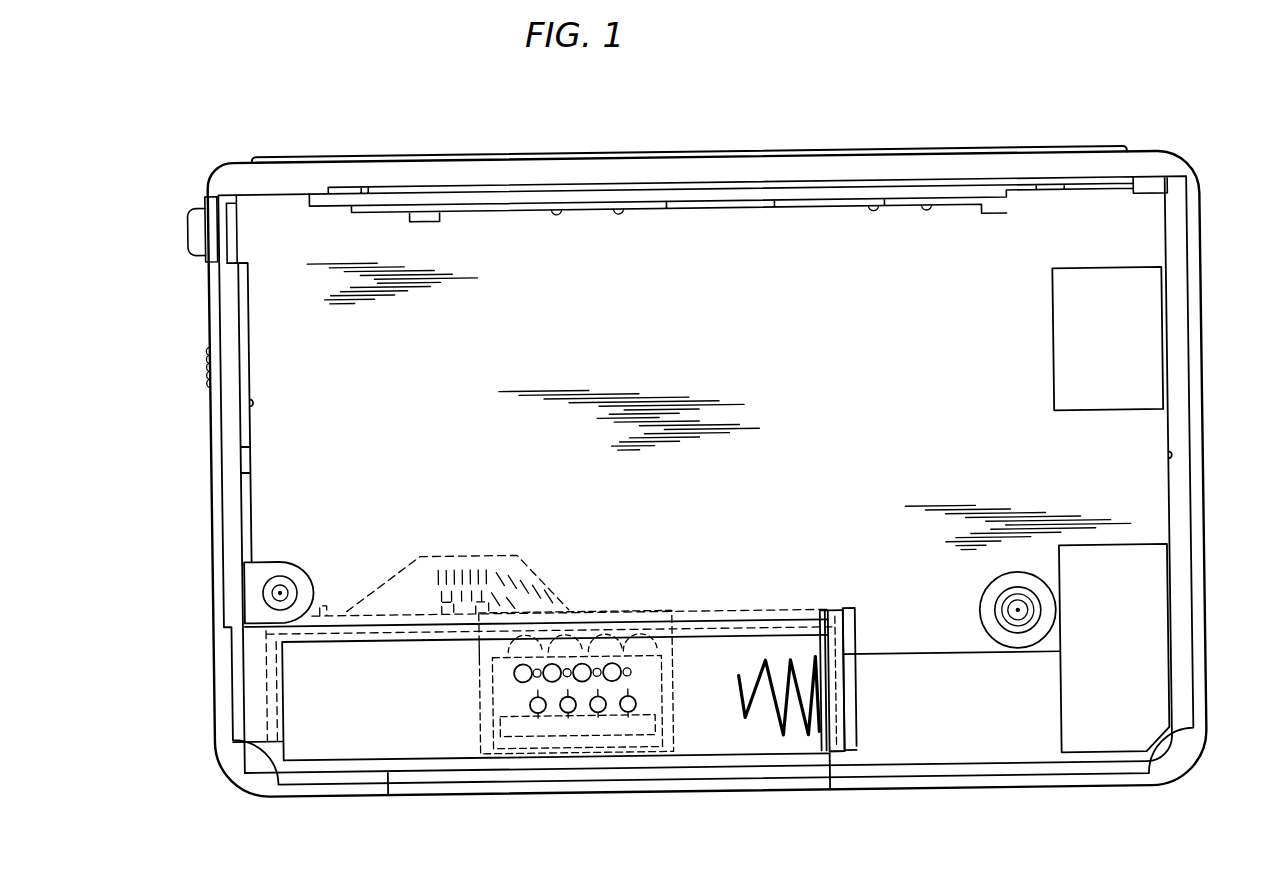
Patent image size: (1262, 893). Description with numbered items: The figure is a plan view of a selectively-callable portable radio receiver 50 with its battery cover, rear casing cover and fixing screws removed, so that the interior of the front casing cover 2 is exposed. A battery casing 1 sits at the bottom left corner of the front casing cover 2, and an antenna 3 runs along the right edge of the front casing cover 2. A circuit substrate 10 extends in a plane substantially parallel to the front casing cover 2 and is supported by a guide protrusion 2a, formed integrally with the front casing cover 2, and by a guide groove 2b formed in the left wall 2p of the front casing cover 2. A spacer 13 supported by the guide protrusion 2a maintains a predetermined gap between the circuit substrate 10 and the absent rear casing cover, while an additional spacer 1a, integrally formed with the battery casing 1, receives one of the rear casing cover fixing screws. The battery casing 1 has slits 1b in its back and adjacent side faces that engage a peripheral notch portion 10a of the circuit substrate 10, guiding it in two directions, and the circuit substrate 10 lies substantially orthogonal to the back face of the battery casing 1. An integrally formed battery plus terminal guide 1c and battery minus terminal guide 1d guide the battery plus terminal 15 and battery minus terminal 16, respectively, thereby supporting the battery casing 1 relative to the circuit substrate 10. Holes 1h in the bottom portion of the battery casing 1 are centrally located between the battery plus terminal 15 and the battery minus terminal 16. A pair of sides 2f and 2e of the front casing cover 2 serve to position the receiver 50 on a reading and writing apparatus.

The battery casing 1 is at (396, 724).
The spacer 1a is at (265, 574).
The slits 1b is at (831, 715).
The battery plus terminal guide 1c is at (262, 752).
The battery minus terminal guide 1d is at (825, 755).
The holes 1h is at (543, 713).
The front casing cover 2 is at (1179, 298).
The guide protrusion 2a is at (1043, 627).
The guide groove 2b is at (233, 193).
The side of front casing cover 2e is at (600, 802).
The side of front casing cover 2f is at (212, 446).
The left wall 2p is at (232, 262).
The antenna 3 is at (1153, 564).
The circuit substrate 10 is at (1146, 222).
The peripheral notch portion 10a is at (840, 642).
The spacer 13 is at (1021, 659).
The battery plus terminal 15 is at (258, 692).
The battery minus terminal 16 is at (752, 720).
The portable radio receiver 50 is at (787, 141).